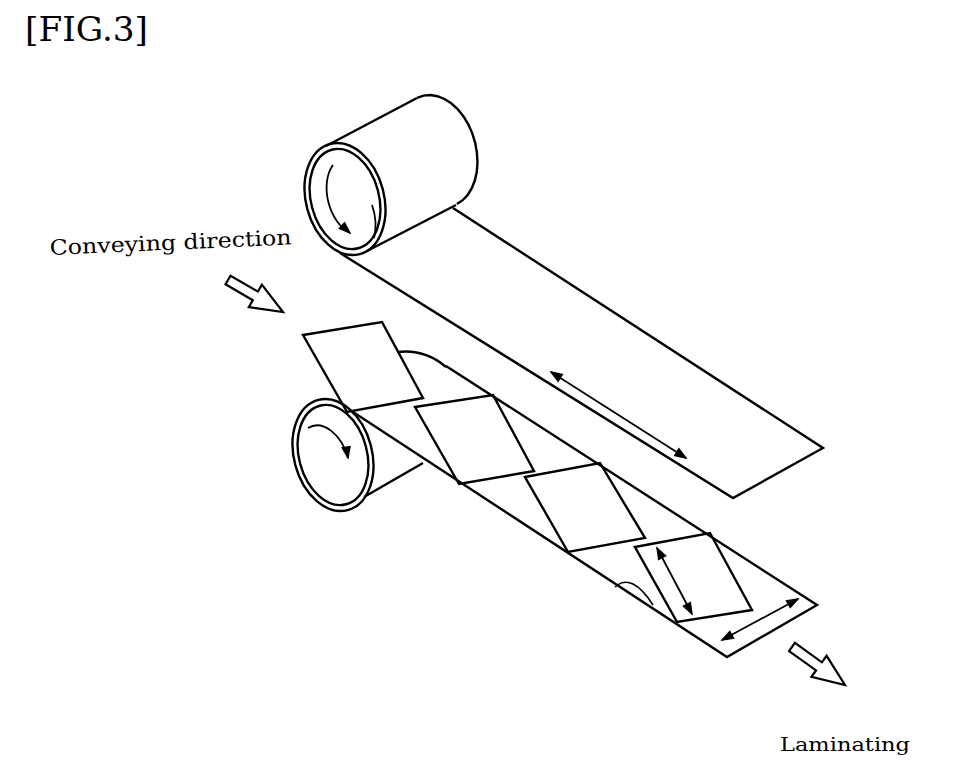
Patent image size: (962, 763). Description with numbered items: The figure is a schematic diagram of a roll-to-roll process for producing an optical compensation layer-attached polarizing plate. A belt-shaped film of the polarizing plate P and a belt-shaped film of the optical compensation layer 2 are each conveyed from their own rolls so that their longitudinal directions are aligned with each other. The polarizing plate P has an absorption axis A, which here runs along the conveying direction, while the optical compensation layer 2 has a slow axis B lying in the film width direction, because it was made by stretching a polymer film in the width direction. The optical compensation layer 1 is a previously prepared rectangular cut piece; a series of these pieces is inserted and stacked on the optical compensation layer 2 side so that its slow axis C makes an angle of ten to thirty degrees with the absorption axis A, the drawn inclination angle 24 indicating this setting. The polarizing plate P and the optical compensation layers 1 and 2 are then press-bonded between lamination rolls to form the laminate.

The optical compensation layer 1 is at (720, 578).
The optical compensation layer 2 is at (780, 586).
The polarizing plate P is at (728, 400).
The absorption axis of the polarizing plate A is at (618, 415).
The slow axis of the optical compensation layer (2) B is at (742, 633).
The slow axis of the optical compensation layer (1) C is at (677, 587).
The inclination angle of sheet piece (24 degrees) 24 is at (615, 586).